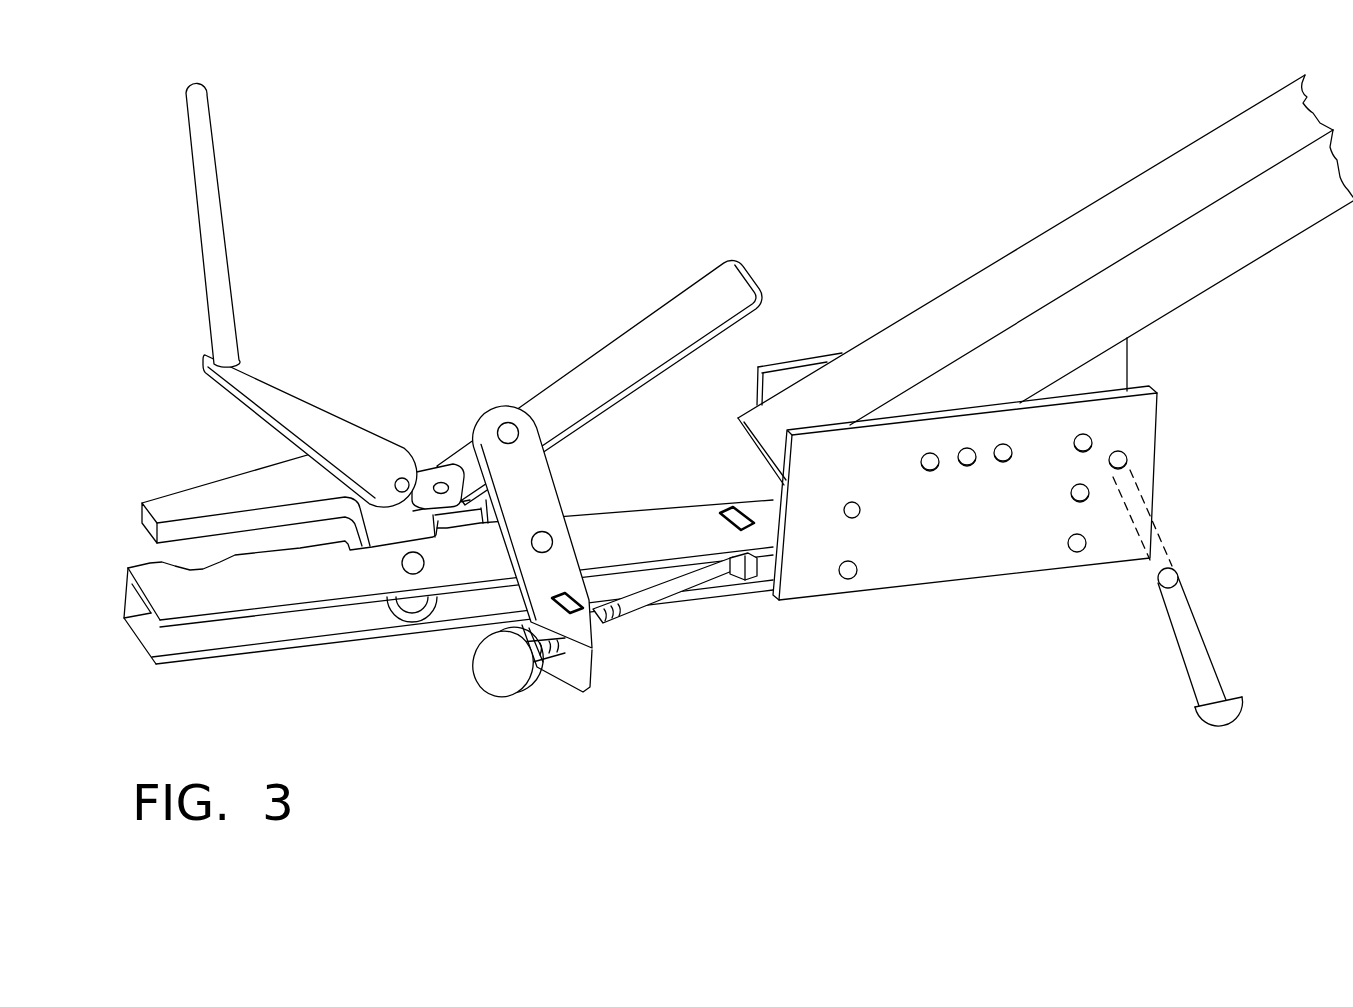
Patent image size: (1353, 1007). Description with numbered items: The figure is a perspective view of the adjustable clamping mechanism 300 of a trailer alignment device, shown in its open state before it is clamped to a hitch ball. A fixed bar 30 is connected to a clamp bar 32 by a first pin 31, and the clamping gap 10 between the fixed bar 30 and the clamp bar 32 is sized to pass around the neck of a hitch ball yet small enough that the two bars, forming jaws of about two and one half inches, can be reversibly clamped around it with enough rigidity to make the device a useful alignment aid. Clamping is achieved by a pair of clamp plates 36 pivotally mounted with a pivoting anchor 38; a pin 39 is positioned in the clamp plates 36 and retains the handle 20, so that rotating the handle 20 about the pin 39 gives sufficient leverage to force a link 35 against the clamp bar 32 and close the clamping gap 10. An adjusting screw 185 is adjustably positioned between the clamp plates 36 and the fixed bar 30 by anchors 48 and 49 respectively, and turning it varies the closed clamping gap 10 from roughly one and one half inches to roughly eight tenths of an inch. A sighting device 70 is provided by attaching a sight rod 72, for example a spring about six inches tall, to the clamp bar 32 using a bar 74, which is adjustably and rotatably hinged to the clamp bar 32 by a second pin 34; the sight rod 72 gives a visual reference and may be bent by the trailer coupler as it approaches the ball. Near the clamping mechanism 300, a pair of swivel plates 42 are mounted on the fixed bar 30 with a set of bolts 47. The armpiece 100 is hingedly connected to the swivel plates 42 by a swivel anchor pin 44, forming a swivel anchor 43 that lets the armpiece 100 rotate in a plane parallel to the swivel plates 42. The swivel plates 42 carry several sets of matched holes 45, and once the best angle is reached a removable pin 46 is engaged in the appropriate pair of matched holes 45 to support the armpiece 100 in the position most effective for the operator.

The clamping gap 10 is at (734, 434).
The handle 20 is at (680, 305).
The fixed bar 30 is at (137, 640).
The first pin 31 is at (410, 572).
The clamp bar 32 is at (243, 482).
The second pin 34 is at (406, 480).
The link 35 is at (464, 458).
The clamp plates 36 is at (548, 525).
The pivoting anchor 38 is at (546, 535).
The pin 39 is at (510, 428).
The swivel plates 42 is at (995, 533).
The swivel anchor 43 is at (948, 566).
The swivel anchor pin 44 is at (860, 509).
The matched holes 45 is at (1124, 467).
The removable pin 46 is at (1190, 630).
The bolts 47 is at (848, 579).
The anchor 48 is at (737, 507).
The anchor 49 is at (590, 648).
The sighting device 70 is at (301, 295).
The sight rod 72 is at (203, 152).
The bar 74 is at (267, 385).
The armpiece 100 is at (1209, 262).
The adjusting screw 185 is at (648, 614).
The clamping mechanism 300 is at (448, 580).